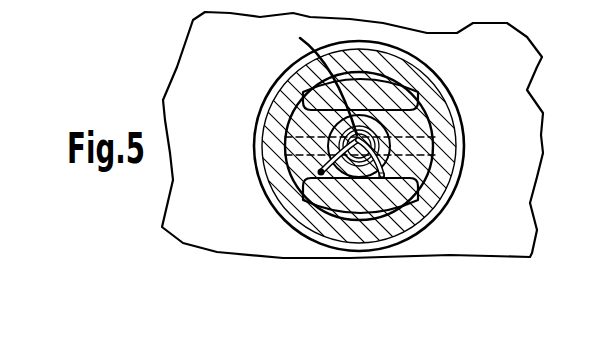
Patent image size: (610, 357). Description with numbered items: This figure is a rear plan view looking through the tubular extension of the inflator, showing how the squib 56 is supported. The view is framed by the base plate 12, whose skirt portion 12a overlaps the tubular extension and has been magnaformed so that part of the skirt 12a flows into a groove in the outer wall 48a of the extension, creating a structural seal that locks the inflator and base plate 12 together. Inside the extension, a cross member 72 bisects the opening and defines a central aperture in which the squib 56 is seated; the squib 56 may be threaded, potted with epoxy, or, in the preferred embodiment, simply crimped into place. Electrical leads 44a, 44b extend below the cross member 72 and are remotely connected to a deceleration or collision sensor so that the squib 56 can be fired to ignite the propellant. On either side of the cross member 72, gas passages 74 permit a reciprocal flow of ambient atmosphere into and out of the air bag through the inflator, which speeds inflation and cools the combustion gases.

The base plate 12 is at (238, 49).
The skirt portion 12a is at (265, 197).
The outer wall 48a is at (277, 90).
The cross member 72 is at (307, 163).
The gas passages 74 is at (393, 95).
The electrical lead 44a is at (322, 168).
The electrical lead 44b is at (384, 164).
The squib device 56 is at (318, 78).